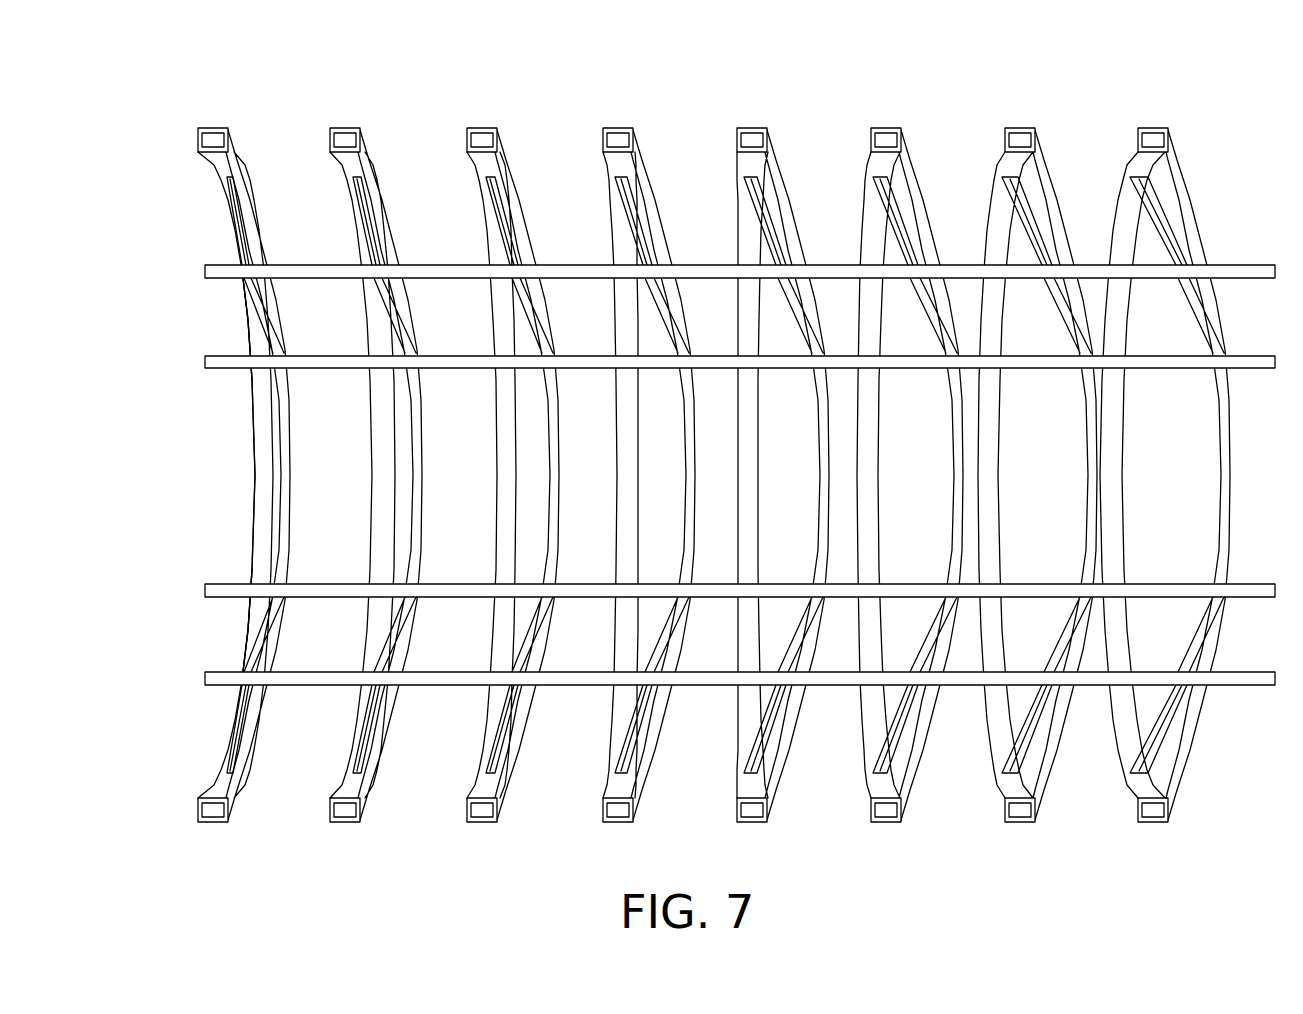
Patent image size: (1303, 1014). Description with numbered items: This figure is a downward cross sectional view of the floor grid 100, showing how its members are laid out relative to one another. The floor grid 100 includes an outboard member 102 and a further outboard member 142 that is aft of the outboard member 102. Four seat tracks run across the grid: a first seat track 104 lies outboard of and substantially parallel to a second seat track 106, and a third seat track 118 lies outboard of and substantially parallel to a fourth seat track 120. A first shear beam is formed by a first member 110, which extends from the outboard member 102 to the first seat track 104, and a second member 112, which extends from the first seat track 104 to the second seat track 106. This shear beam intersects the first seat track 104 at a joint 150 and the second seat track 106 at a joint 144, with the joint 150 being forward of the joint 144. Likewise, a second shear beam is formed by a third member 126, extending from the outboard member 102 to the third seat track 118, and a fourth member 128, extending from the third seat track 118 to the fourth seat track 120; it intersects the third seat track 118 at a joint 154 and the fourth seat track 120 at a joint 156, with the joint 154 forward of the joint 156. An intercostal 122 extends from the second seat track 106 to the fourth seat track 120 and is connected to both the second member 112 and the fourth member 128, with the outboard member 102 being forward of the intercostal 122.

The floor grid 100 is at (697, 415).
The outboard member 102 is at (216, 140).
The outboard member 142 is at (348, 141).
The first member 110 is at (241, 193).
The joint 150 is at (265, 268).
The first seat track 104 is at (208, 268).
The second member 112 is at (272, 315).
The second seat track 106 is at (207, 360).
The joint 144 is at (292, 364).
The intercostal 122 is at (292, 455).
The joint 156 is at (292, 585).
The fourth seat track 120 is at (210, 590).
The fourth member 128 is at (278, 625).
The third seat track 118 is at (208, 676).
The joint 154 is at (270, 678).
The third member 126 is at (245, 722).